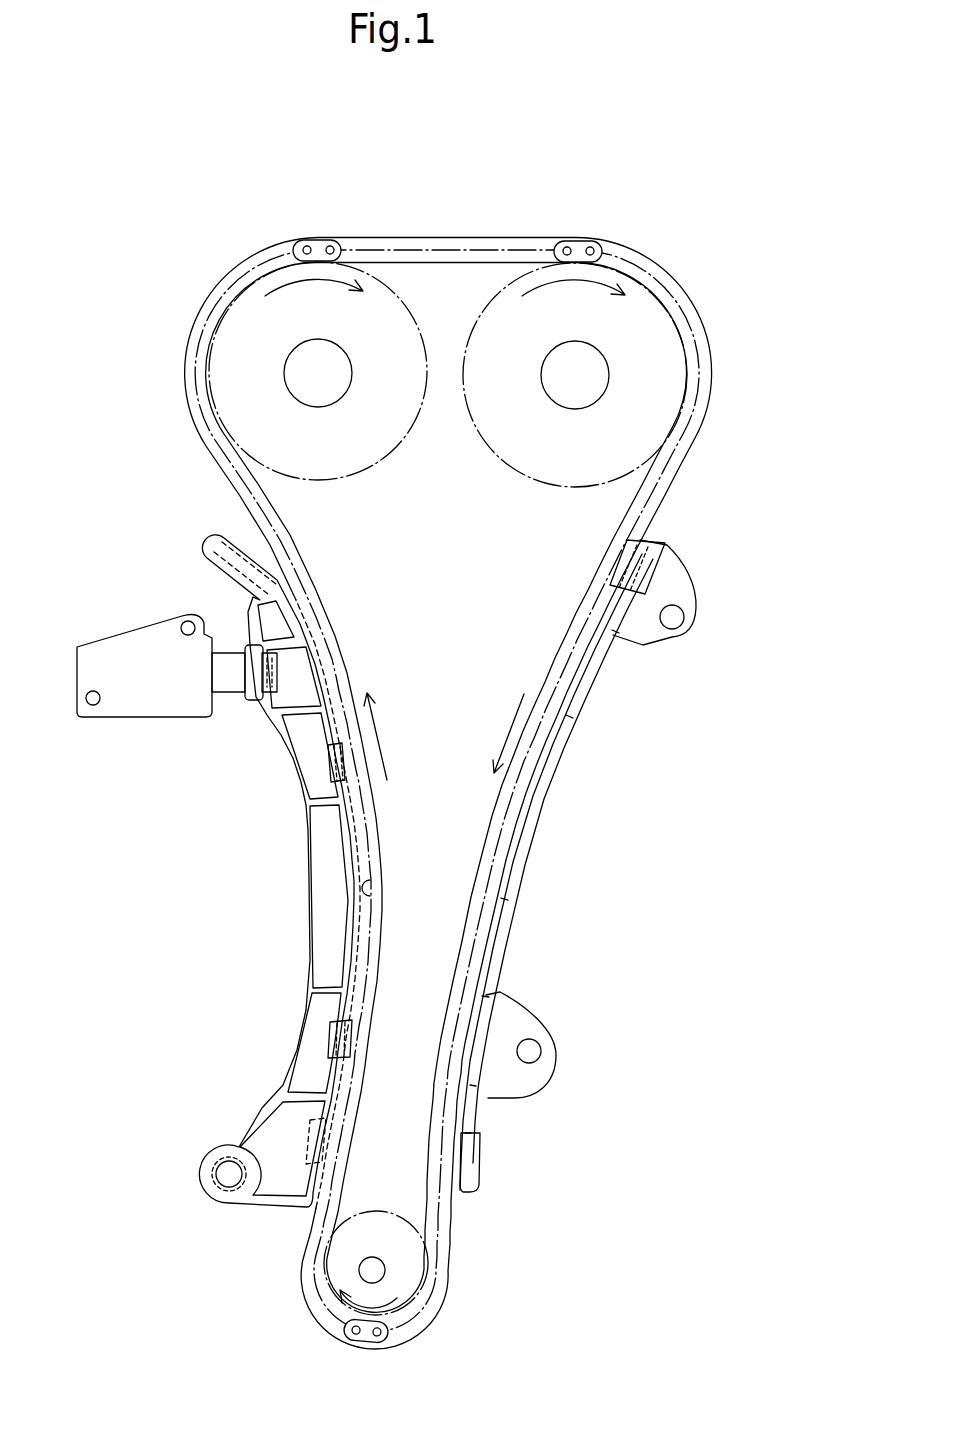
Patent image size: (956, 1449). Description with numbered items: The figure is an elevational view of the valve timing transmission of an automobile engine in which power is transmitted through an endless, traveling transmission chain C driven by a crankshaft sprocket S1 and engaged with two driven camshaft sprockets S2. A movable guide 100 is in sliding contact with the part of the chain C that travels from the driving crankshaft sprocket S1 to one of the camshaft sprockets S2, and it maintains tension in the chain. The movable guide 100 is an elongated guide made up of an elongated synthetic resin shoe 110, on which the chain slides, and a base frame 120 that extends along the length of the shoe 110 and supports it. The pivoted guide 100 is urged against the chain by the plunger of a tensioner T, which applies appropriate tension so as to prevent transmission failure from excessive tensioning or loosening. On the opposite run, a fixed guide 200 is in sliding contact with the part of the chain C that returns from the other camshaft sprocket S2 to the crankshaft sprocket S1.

The transmission chain C is at (476, 224).
The crankshaft sprocket S1 is at (372, 1195).
The camshaft sprockets S2 is at (367, 498).
The tensioner T is at (145, 702).
The movable guide 100 is at (217, 871).
The shoe 110 is at (332, 1030).
The base frame 120 is at (309, 1080).
The fixed guide 200 is at (533, 878).